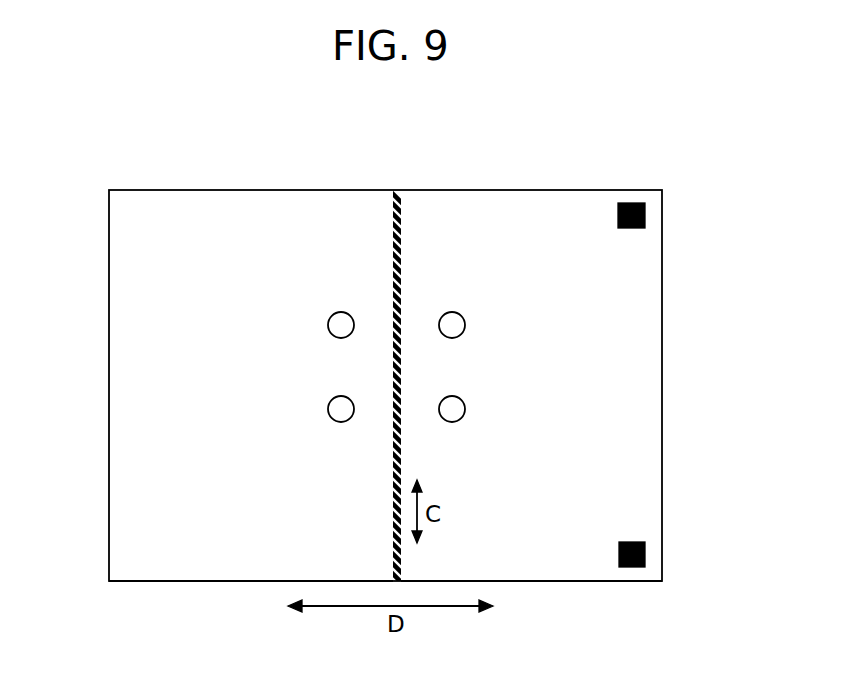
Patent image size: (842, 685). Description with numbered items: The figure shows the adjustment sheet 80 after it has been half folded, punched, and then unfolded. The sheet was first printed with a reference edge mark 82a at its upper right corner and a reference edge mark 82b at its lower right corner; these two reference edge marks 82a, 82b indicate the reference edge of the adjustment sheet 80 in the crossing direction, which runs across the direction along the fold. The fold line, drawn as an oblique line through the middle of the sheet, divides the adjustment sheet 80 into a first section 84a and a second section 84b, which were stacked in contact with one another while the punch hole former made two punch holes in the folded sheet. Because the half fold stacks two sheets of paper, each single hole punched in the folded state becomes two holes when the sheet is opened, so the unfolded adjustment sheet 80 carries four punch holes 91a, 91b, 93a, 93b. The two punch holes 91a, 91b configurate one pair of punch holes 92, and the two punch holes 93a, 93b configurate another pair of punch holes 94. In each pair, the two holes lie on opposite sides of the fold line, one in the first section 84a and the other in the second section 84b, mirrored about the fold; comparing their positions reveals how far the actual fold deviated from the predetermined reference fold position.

The adjustment sheet 80 is at (330, 177).
The reference edge mark 82a is at (645, 213).
The reference edge mark 82b is at (645, 553).
The first section 84a is at (178, 581).
The second section 84b is at (584, 581).
The punch hole 91a is at (328, 325).
The punch hole 91b is at (465, 323).
The pair of punch holes 92 is at (409, 316).
The punch hole 93a is at (328, 412).
The punch hole 93b is at (465, 410).
The pair of punch holes 94 is at (376, 424).